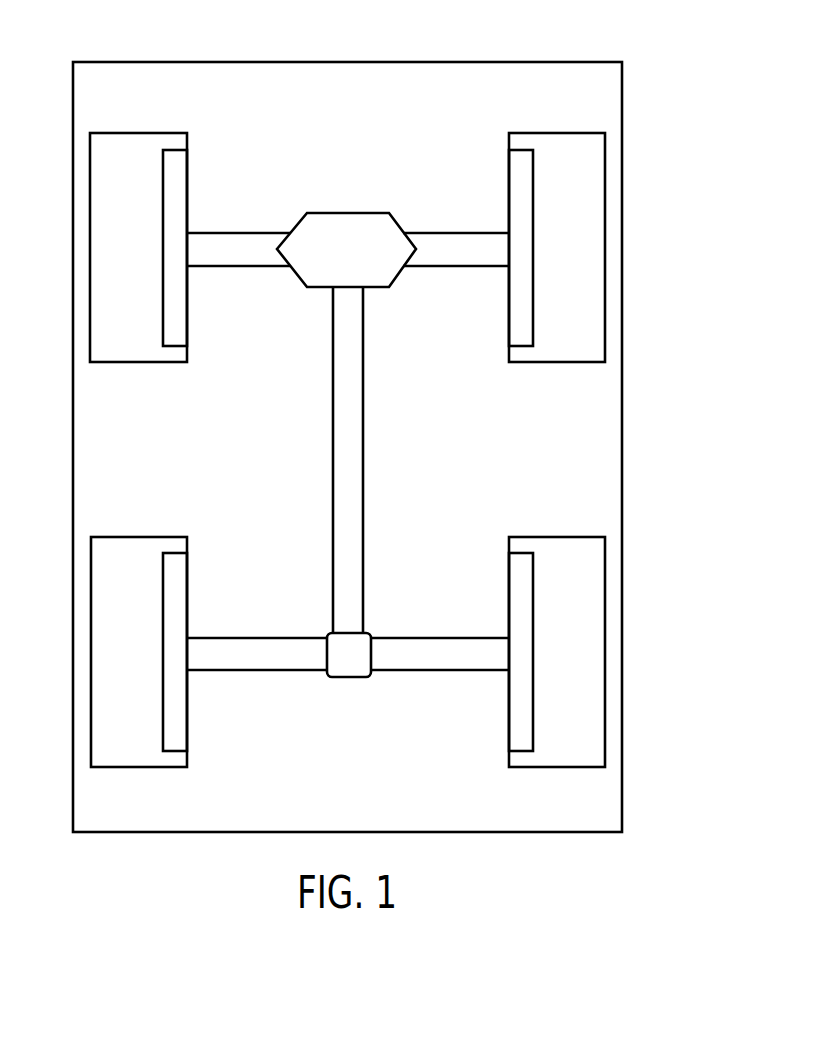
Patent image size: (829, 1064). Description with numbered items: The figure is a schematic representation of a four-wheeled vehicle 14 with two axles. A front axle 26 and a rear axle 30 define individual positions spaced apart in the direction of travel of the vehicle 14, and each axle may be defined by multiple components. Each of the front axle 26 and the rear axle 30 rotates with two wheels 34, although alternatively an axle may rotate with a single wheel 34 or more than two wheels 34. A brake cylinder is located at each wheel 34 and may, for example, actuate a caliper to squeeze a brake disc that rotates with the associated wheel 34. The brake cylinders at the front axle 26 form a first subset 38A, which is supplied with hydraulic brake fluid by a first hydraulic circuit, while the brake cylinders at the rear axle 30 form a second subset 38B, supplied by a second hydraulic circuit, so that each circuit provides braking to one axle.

The vehicle 14 is at (490, 62).
The front axle 26 is at (228, 233).
The rear axle 30 is at (404, 672).
The wheel 34 is at (103, 235).
The first subset of brake cylinders 38A is at (177, 327).
The second subset of brake cylinders 38B is at (179, 595).